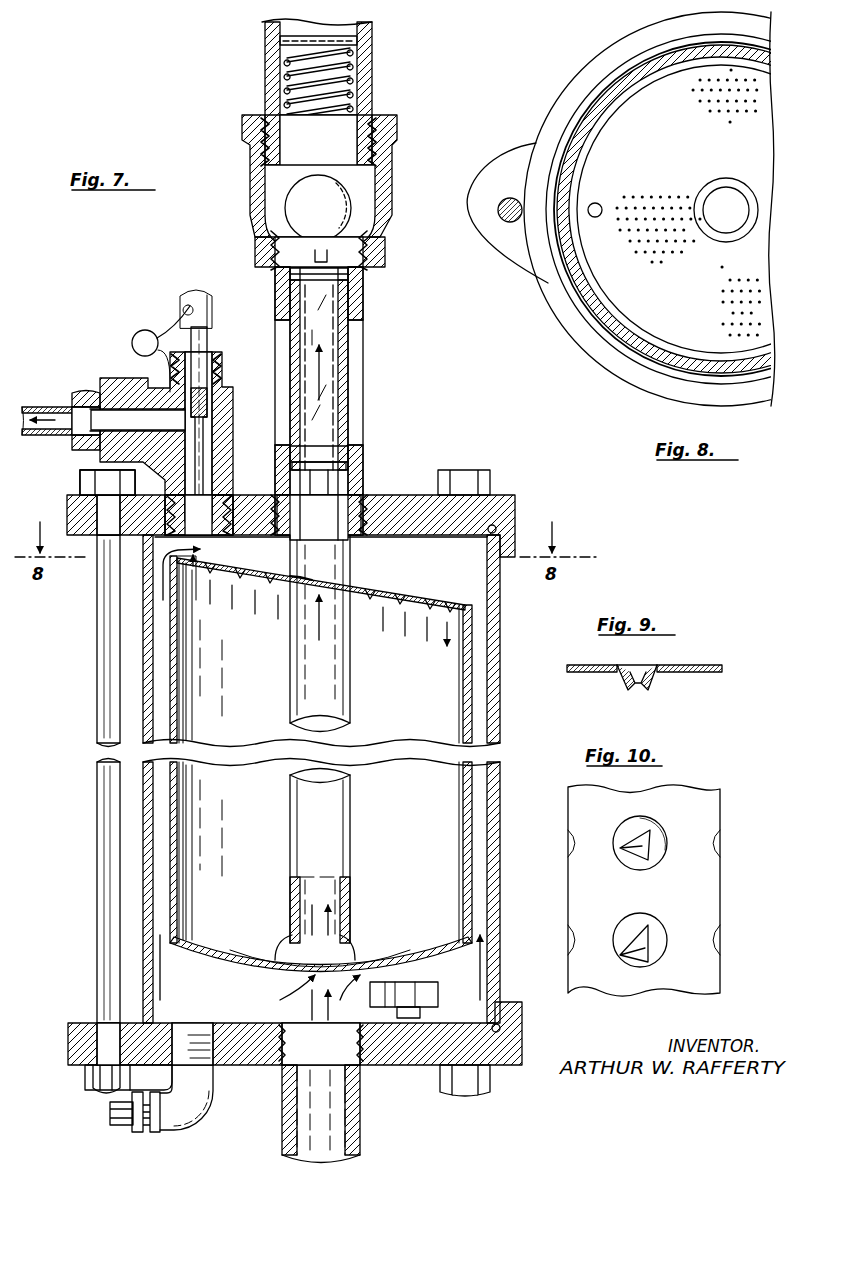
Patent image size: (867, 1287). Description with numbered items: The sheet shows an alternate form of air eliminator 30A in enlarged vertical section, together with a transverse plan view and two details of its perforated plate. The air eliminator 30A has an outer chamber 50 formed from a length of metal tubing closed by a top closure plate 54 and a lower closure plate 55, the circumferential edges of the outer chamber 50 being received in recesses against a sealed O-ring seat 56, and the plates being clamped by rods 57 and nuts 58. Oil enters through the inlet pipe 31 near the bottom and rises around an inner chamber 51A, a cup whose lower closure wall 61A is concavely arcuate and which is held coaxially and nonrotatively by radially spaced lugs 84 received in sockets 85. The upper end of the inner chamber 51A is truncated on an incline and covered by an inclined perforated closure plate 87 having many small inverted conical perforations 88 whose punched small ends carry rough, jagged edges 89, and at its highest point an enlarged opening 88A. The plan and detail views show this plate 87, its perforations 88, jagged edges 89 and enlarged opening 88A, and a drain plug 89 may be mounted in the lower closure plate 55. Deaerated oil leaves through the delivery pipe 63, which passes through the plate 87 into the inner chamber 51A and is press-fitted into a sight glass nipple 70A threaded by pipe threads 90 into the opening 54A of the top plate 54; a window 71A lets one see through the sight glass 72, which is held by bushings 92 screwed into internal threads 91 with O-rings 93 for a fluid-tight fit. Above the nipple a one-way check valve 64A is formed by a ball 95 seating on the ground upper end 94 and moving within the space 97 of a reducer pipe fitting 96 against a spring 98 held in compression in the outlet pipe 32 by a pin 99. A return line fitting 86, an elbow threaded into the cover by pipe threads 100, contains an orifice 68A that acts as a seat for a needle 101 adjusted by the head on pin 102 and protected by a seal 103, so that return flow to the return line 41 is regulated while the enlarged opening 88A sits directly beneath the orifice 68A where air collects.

In FIG. 7, the air eliminator 30A is at (420, 490).
In FIG. 7, the inlet pipe 31 is at (362, 1130).
In FIG. 7, the outlet pipe 32 is at (265, 80).
In FIG. 7, the return line 41 is at (62, 437).
In FIG. 7, the outer chamber 50 is at (500, 753).
In FIG. 8, the outer chamber 50 is at (570, 308).
In FIG. 7, the inner chamber 51A is at (488, 835).
In FIG. 7, the top closure plate 54 is at (500, 500).
In FIG. 7, the opening in plate 54 54A is at (355, 537).
In FIG. 7, the lower closure plate 55 is at (405, 1060).
In FIG. 7, the O-ring seat 56 is at (496, 527).
In FIG. 7, the rods 57 is at (98, 663).
In FIG. 8, the rods 57 is at (503, 222).
In FIG. 7, the nuts 58 is at (86, 1078).
In FIG. 7, the lower closure wall 61A is at (330, 980).
In FIG. 7, the delivery pipe 63 is at (335, 685).
In FIG. 8, the delivery pipe 63 is at (727, 179).
In FIG. 7, the one-way check valve 64A is at (350, 176).
In FIG. 7, the orifice 68A is at (160, 500).
In FIG. 7, the sight glass nipple 70A is at (362, 458).
In FIG. 7, the window 71A is at (363, 355).
In FIG. 7, the sight glass 72 is at (350, 383).
In FIG. 7, the lugs 84 is at (421, 1011).
In FIG. 7, the sockets 85 is at (440, 993).
In FIG. 7, the return line fitting 86 is at (222, 450).
In FIG. 7, the perforated closure plate 87 is at (375, 590).
In FIG. 8, the perforated closure plate 87 is at (707, 315).
In FIG. 9, the perforated closure plate 87 is at (592, 665).
In FIG. 10, the perforated closure plate 87 is at (614, 898).
In FIG. 7, the perforations 88 is at (418, 600).
In FIG. 9, the perforations 88 is at (652, 670).
In FIG. 10, the perforations 88 is at (650, 835).
In FIG. 7, the enlarged opening 88A is at (205, 562).
In FIG. 8, the enlarged opening 88A is at (600, 204).
In FIG. 7, the jagged edges 89 is at (182, 1120).
In FIG. 9, the jagged edges 89 is at (620, 688).
In FIG. 10, the jagged edges 89 is at (640, 866).
In FIG. 7, the pipe threads 90 is at (365, 512).
In FIG. 7, the internal threads 91 is at (350, 468).
In FIG. 7, the bushings 92 is at (365, 272).
In FIG. 7, the O-rings 93 is at (292, 282).
In FIG. 7, the upper end of nipple 94 is at (272, 237).
In FIG. 7, the ball 95 is at (333, 217).
In FIG. 7, the reducer pipe fitting 96 is at (392, 215).
In FIG. 7, the space 97 is at (272, 190).
In FIG. 7, the spring 98 is at (340, 90).
In FIG. 7, the pin 99 is at (360, 40).
In FIG. 7, the pipe threads 100 is at (218, 498).
In FIG. 7, the needle 101 is at (218, 432).
In FIG. 7, the pin 102 is at (210, 338).
In FIG. 7, the seal 103 is at (142, 330).